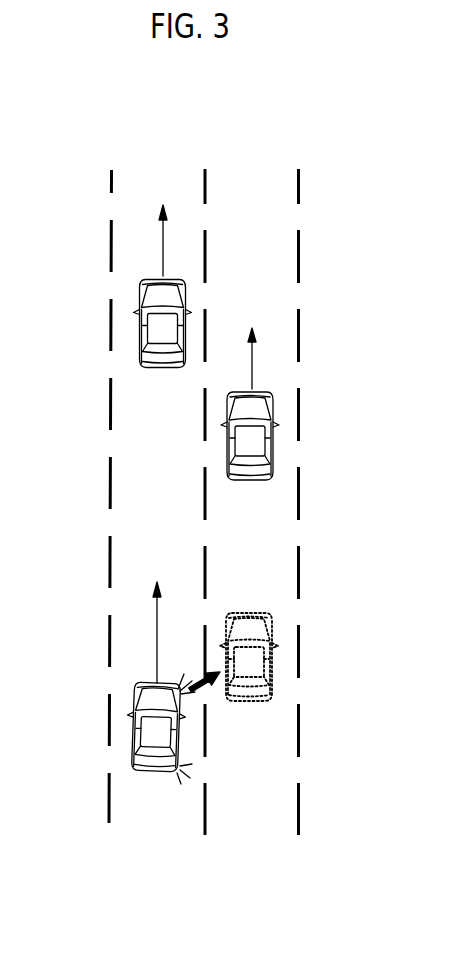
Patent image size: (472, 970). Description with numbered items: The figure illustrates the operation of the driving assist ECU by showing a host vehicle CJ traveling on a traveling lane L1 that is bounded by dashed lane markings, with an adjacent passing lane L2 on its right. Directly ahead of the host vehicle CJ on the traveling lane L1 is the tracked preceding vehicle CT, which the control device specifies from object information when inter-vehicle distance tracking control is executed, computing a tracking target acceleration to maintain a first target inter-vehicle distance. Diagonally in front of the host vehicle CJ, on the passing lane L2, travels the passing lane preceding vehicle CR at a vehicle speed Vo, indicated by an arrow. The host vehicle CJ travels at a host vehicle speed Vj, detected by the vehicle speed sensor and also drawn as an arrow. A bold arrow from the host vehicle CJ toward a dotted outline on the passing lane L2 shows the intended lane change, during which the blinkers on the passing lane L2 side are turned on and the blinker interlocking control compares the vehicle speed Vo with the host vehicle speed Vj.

The host vehicle CJ is at (134, 750).
The tracked preceding vehicle CT is at (143, 352).
The passing lane preceding vehicle CR is at (273, 468).
The traveling lane L1 is at (157, 485).
The passing lane L2 is at (268, 485).
The vehicle speed of the passing lane preceding vehicle Vo is at (251, 346).
The host vehicle speed Vj is at (156, 615).